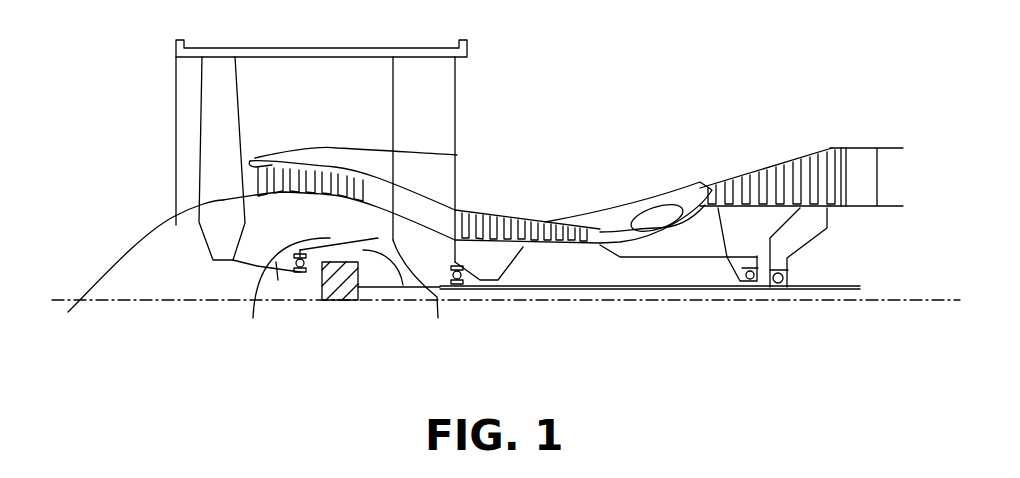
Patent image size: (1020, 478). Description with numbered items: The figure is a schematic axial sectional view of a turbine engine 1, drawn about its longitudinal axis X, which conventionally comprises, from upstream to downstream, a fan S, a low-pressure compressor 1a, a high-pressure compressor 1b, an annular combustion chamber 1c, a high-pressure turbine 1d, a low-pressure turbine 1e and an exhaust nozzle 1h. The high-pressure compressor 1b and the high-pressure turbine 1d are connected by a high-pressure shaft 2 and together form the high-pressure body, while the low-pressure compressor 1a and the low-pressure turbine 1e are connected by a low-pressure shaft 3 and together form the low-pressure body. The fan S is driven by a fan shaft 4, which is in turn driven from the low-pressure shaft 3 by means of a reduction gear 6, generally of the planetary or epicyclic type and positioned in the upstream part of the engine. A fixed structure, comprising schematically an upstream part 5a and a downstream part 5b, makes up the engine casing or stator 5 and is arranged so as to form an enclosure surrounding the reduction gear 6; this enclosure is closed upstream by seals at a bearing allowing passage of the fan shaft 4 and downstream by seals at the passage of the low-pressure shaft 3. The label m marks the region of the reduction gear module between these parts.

The turbine engine 1 is at (582, 81).
The fan S is at (205, 112).
The low-pressure compressor 1a is at (277, 158).
The high-pressure compressor 1b is at (490, 220).
The annular combustion chamber 1c is at (655, 216).
The high-pressure turbine 1d is at (706, 188).
The low-pressure turbine 1e is at (830, 160).
The exhaust nozzle 1h is at (890, 172).
The high-pressure shaft 2 is at (650, 258).
The low-pressure shaft 3 is at (555, 289).
The fan shaft 4 is at (278, 280).
The engine casing or stator 5 is at (378, 242).
The upstream part 5a is at (286, 290).
The downstream part 5b is at (406, 291).
The reduction gear 6 is at (336, 290).
The gear module m is at (400, 333).
The longitudinal axis X is at (70, 312).